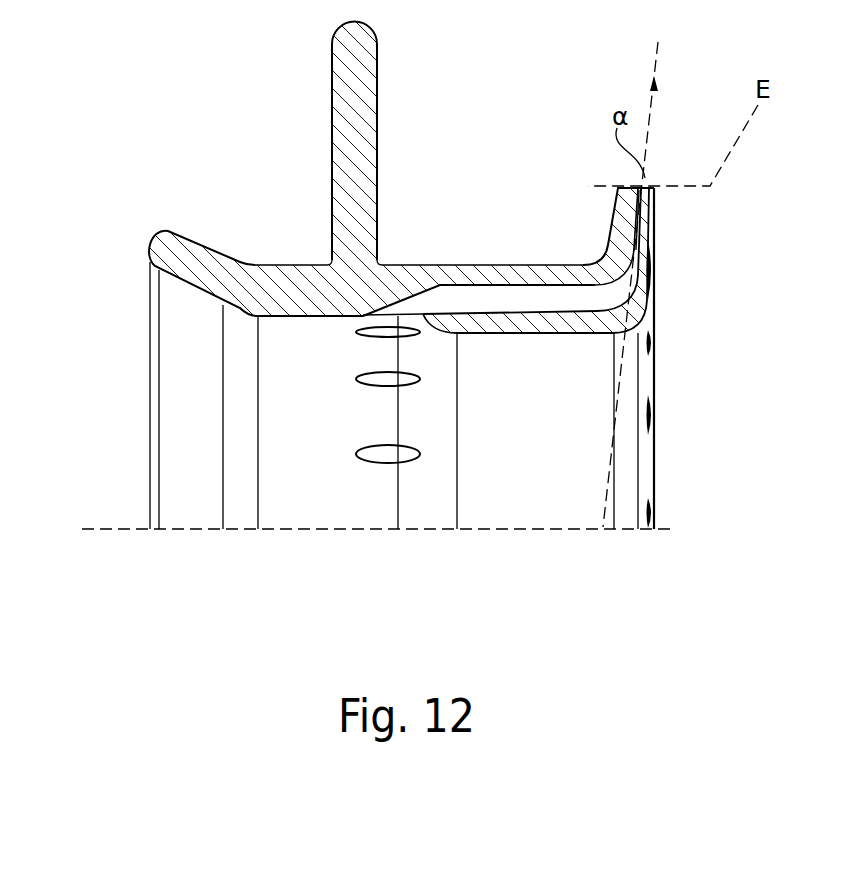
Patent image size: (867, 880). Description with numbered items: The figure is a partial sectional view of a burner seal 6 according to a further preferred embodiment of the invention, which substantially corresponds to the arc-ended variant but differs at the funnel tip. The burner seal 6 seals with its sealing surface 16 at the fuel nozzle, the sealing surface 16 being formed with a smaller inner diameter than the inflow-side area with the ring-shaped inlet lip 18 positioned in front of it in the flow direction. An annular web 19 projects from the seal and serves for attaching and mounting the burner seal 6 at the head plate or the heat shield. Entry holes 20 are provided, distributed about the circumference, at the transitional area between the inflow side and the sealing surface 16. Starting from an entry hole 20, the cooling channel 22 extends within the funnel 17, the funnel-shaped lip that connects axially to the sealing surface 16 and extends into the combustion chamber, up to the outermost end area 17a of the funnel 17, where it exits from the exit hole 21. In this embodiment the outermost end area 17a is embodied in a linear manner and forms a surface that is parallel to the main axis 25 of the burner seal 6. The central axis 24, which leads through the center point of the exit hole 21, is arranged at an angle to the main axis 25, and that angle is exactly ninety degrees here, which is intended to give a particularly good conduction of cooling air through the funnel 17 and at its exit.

The burner seal 6 is at (148, 130).
The sealing surface 16 is at (575, 335).
The funnel 17 is at (658, 206).
The outermost end area 17a is at (655, 186).
The inlet lip 18 is at (168, 244).
The annular web 19 is at (337, 58).
The entry holes 20 is at (397, 452).
The exit hole 21 is at (642, 185).
The cooling channel 22 is at (509, 292).
The central axis 24 is at (655, 60).
The main axis 25 is at (107, 531).